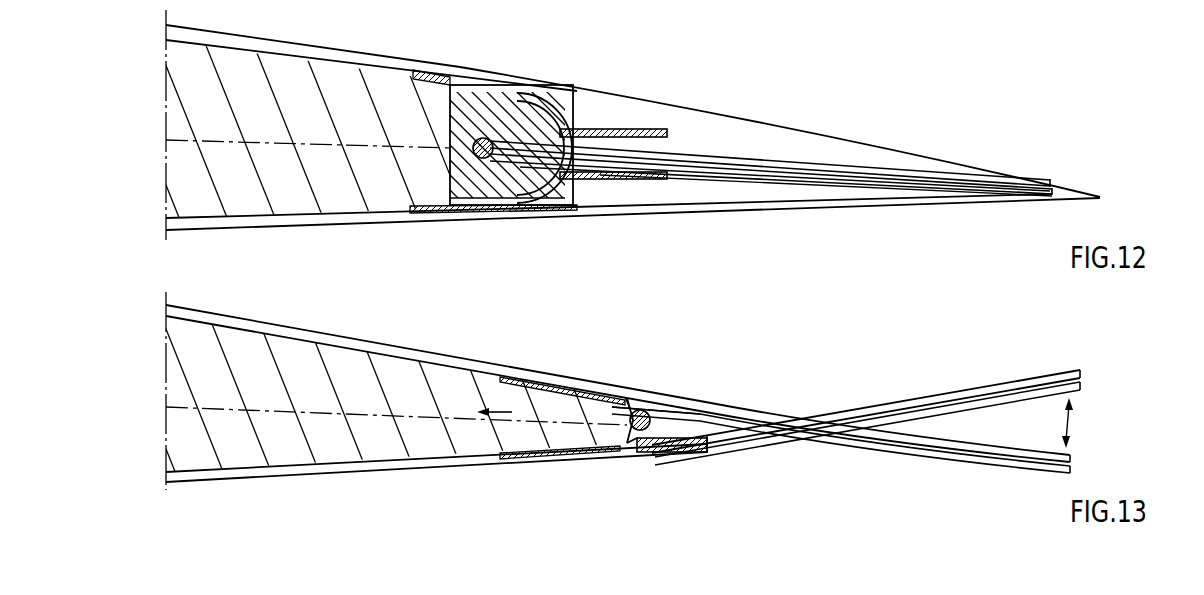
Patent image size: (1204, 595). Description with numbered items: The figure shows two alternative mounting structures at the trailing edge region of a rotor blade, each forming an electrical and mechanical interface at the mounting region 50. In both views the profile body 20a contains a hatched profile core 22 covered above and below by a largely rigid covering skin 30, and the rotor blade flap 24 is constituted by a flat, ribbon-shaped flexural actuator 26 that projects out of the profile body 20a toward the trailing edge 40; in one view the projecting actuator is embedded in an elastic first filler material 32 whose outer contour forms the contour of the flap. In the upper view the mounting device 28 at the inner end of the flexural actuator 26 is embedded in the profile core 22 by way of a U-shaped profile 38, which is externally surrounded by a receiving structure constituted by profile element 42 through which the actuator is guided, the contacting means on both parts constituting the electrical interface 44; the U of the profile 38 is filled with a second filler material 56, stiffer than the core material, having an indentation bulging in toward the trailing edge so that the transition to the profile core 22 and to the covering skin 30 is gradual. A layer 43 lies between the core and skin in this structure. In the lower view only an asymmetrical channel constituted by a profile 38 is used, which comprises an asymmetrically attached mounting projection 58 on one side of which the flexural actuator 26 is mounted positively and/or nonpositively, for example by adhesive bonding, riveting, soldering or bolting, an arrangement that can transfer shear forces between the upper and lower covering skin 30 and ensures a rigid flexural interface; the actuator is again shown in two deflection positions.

In FIG. 12, the profile body 20a is at (252, 22).
In FIG. 13, the profile body 20a is at (379, 326).
In FIG. 12, the profile core 22 is at (300, 60).
In FIG. 13, the profile core 22 is at (410, 445).
In FIG. 12, the rotor blade flap 24 is at (817, 117).
In FIG. 13, the rotor blade flap 24 is at (811, 387).
In FIG. 12, the flexural actuator 26 is at (733, 173).
In FIG. 13, the flexural actuator 26 is at (933, 398).
In FIG. 12, the mounting device 28 is at (538, 227).
In FIG. 13, the mounting device 28 is at (608, 474).
In FIG. 12, the covering skin 30 is at (377, 55).
In FIG. 13, the covering skin 30 is at (277, 325).
In FIG. 12, the first filler material 32 is at (767, 187).
In FIG. 12, the profile 38 is at (517, 120).
In FIG. 13, the profile 38 is at (588, 394).
In FIG. 12, the trailing edge 40 is at (1072, 170).
In FIG. 13, the trailing edge 40 is at (1090, 362).
In FIG. 12, the profile element 42 is at (447, 77).
In FIG. 12, the lower sleeve layer 43 is at (478, 218).
In FIG. 13, the lower sleeve layer 43 is at (555, 378).
In FIG. 12, the electrical interface 44 is at (498, 207).
In FIG. 13, the electrical interface 44 is at (633, 447).
In FIG. 12, the mounting region 50 is at (585, 72).
In FIG. 13, the mounting region 50 is at (670, 382).
In FIG. 12, the second filler material 56 is at (540, 127).
In FIG. 13, the mounting projection 58 is at (730, 454).